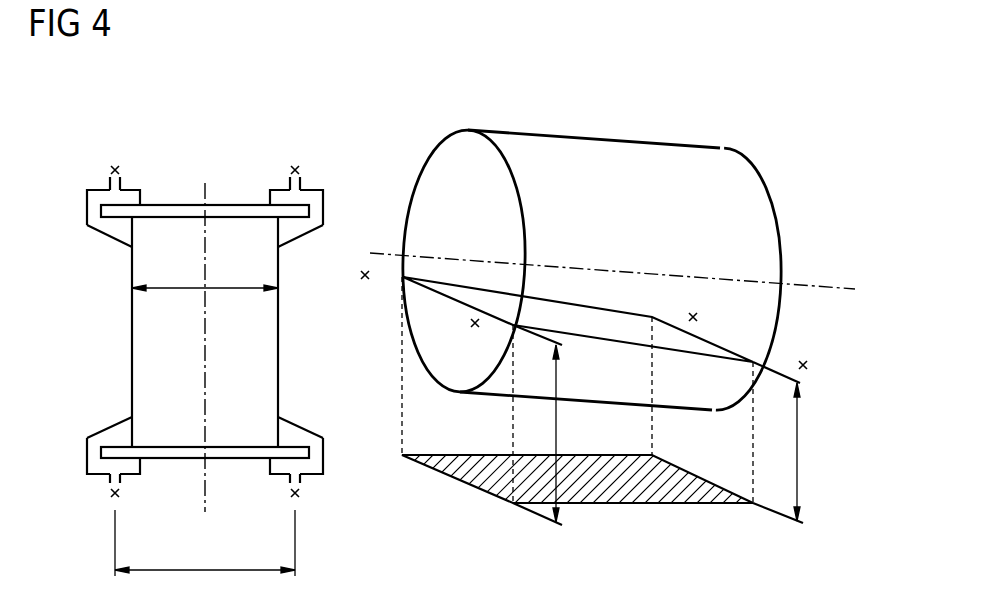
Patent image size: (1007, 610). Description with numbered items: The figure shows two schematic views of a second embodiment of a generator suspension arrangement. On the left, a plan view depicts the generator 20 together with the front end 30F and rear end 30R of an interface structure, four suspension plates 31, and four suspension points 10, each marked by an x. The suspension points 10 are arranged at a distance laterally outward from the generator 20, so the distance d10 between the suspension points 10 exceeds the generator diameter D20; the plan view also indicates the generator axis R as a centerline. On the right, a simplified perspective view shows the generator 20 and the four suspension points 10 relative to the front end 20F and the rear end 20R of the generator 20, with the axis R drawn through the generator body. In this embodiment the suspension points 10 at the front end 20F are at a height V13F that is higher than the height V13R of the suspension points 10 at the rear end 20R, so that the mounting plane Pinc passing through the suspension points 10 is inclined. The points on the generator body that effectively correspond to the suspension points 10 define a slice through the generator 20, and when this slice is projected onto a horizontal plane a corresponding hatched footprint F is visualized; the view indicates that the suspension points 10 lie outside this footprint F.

The suspension points 10 is at (471, 336).
The generator 20 is at (398, 270).
The front end of the generator 20F is at (464, 238).
The rear end of the generator 20R is at (781, 280).
The rear end of the interface structure 30R is at (175, 217).
The front end of the interface structure 30F is at (175, 461).
The suspension plates 31 is at (205, 331).
The axis of rotation R is at (532, 294).
The mounting plane Pinc is at (601, 303).
The footprint F is at (581, 501).
The generator diameter D20 is at (205, 270).
The distance between the suspension points d10 is at (205, 544).
The height of the suspension points at the front end V13F is at (597, 433).
The height of the suspension points at the rear end V13R is at (839, 452).